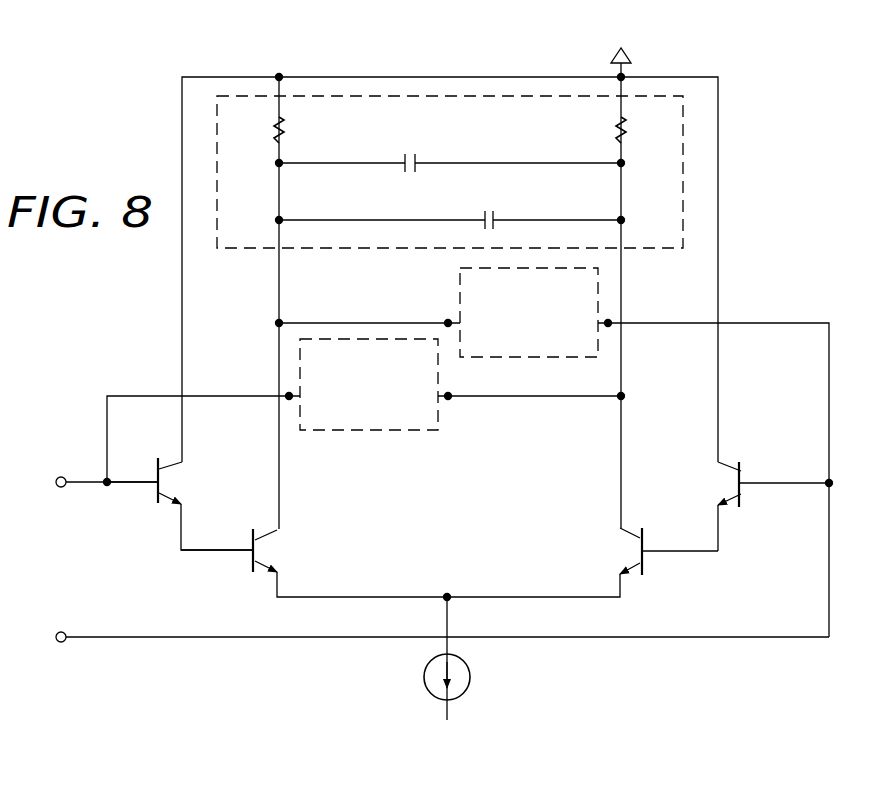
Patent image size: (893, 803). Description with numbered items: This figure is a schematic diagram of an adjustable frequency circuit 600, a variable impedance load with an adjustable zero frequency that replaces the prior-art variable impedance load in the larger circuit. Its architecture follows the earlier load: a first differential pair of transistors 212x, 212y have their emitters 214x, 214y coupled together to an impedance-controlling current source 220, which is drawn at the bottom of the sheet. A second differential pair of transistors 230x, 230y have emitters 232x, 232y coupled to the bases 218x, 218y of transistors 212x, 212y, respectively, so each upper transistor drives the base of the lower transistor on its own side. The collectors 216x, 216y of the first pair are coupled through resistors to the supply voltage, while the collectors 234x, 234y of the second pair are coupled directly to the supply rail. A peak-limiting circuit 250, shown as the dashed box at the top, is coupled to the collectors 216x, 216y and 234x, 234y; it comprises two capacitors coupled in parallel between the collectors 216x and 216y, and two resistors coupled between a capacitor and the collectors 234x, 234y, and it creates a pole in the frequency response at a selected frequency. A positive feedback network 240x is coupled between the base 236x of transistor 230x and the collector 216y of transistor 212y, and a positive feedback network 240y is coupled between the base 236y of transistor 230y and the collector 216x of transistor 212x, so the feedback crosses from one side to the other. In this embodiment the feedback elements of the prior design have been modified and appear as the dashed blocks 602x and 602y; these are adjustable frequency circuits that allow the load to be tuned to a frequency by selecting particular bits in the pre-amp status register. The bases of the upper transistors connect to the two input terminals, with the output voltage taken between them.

The adjustable frequency circuit 600 is at (757, 204).
The peak-limiting circuit 250 is at (243, 250).
The adjustable frequency circuit block 602x is at (460, 312).
The adjustable frequency circuit block 602y is at (367, 430).
The positive feedback network 240x is at (770, 322).
The positive feedback network 240y is at (152, 395).
The transistor 230x is at (717, 480).
The transistor 230y is at (178, 478).
The collector 234x is at (723, 460).
The collector 234y is at (173, 457).
The base 236x is at (742, 487).
The base 236y is at (152, 492).
The emitter 232x is at (733, 500).
The emitter 232y is at (163, 500).
The transistor 212x is at (622, 553).
The transistor 212y is at (275, 552).
The collector 216x is at (627, 533).
The collector 216y is at (275, 530).
The base 218x is at (643, 553).
The base 218y is at (250, 550).
The emitter 214x is at (632, 570).
The emitter 214y is at (265, 568).
The impedance-controlling current source 220 is at (425, 675).